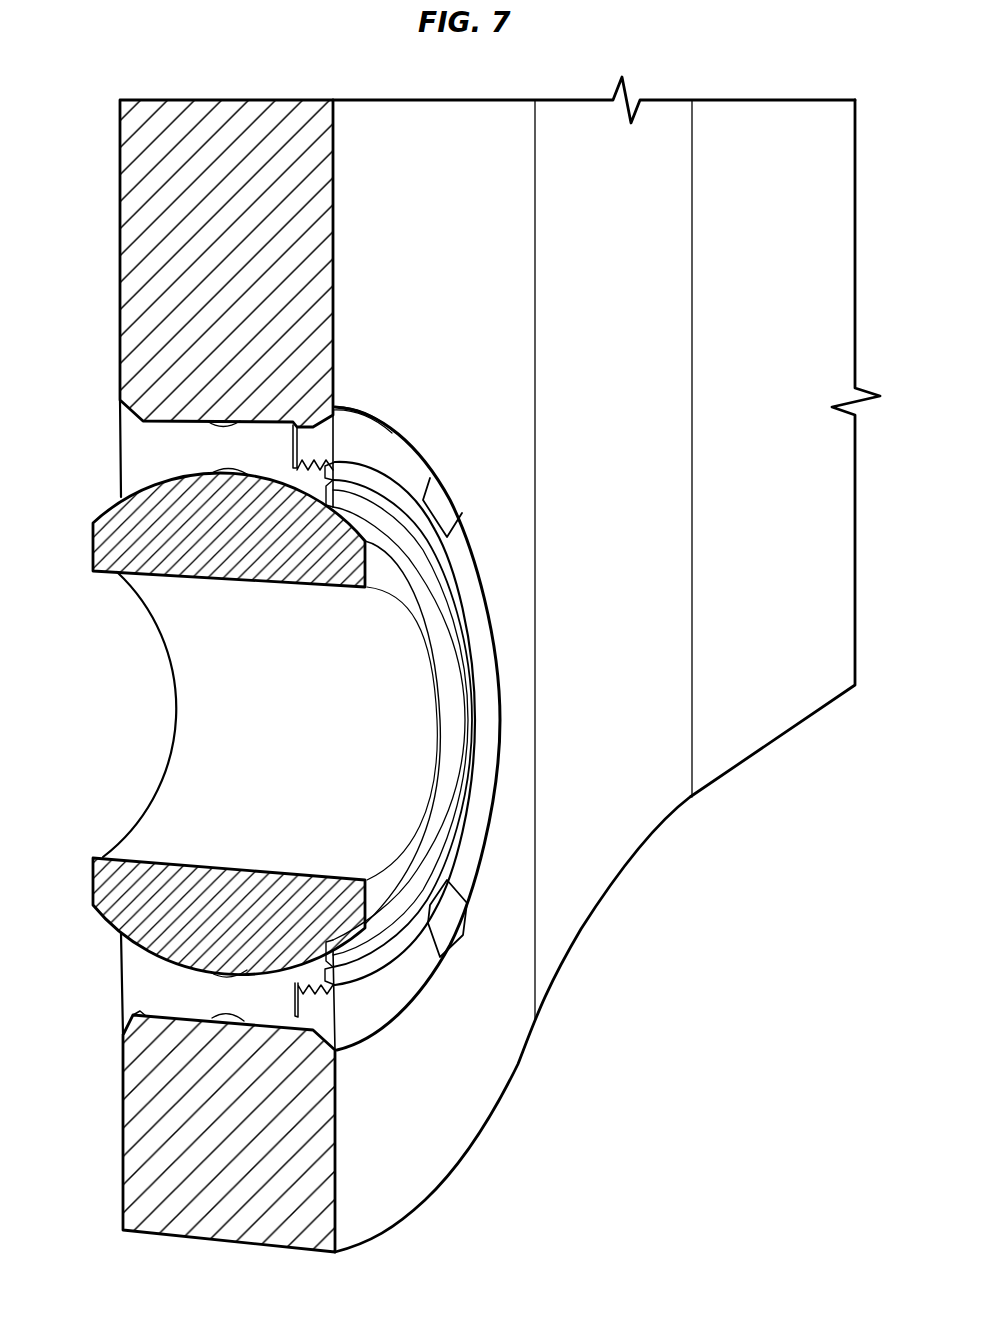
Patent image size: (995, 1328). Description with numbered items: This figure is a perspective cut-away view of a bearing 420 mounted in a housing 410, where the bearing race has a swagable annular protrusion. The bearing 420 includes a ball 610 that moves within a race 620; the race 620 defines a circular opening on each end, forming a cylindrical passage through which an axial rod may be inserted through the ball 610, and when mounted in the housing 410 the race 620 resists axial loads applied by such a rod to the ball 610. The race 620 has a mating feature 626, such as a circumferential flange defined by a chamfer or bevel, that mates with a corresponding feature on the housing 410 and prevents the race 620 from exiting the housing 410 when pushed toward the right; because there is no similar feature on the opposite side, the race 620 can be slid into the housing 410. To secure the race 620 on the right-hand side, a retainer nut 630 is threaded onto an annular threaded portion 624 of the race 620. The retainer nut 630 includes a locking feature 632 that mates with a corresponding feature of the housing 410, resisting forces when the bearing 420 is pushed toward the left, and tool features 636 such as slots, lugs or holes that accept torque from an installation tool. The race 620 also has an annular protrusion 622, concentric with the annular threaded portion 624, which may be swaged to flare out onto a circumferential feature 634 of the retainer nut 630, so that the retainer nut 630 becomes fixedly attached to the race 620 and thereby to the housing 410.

The housing 410 is at (612, 812).
The bearing 420 is at (556, 838).
The ball 610 is at (103, 548).
The race 620 is at (153, 975).
The annular protrusion 622 is at (380, 963).
The annular threaded portion 624 is at (340, 410).
The mating feature 626 is at (130, 1017).
The retainer nut 630 is at (355, 1020).
The locking feature 632 is at (342, 407).
The circumferential feature 634 is at (437, 500).
The tool features 636 is at (448, 497).